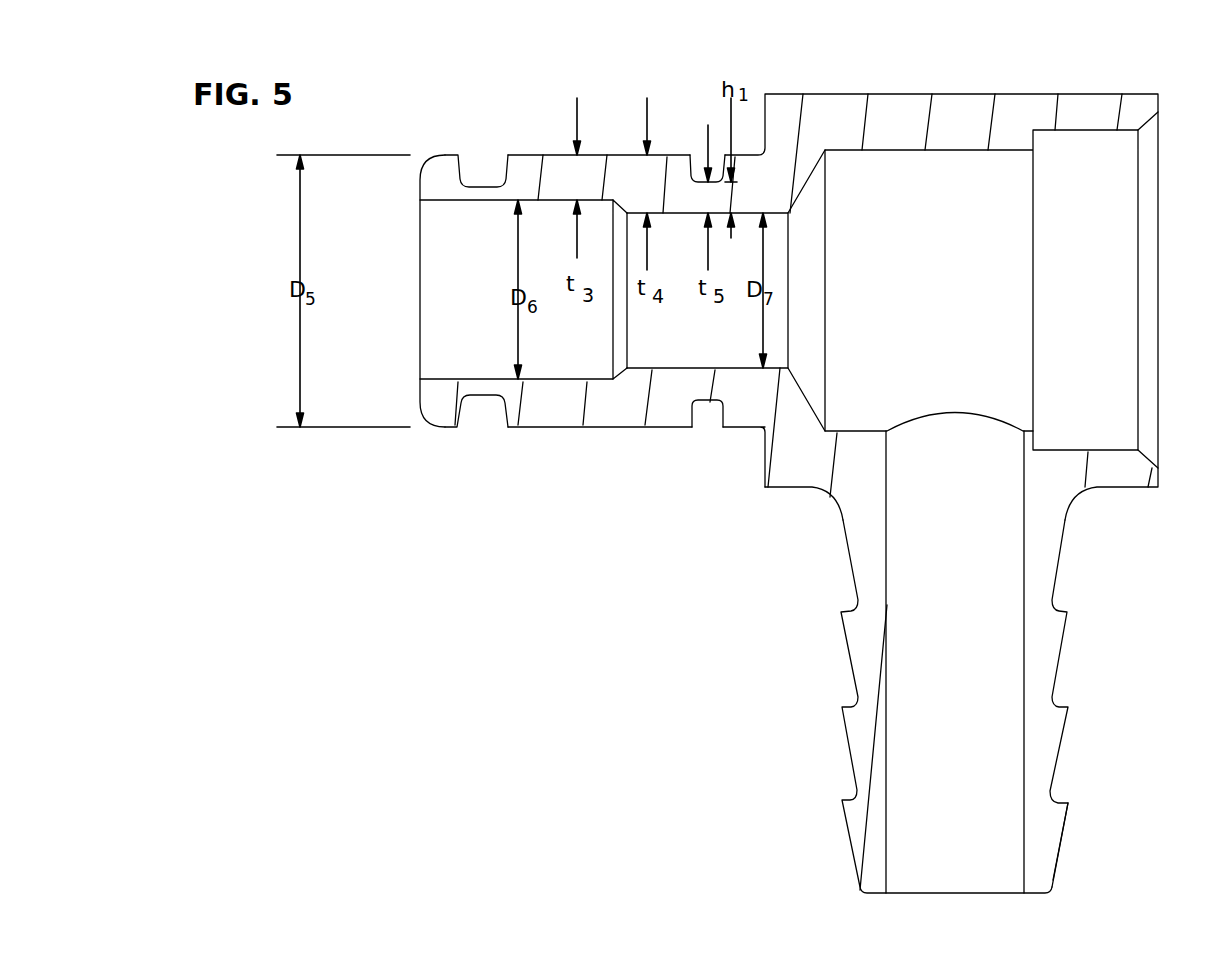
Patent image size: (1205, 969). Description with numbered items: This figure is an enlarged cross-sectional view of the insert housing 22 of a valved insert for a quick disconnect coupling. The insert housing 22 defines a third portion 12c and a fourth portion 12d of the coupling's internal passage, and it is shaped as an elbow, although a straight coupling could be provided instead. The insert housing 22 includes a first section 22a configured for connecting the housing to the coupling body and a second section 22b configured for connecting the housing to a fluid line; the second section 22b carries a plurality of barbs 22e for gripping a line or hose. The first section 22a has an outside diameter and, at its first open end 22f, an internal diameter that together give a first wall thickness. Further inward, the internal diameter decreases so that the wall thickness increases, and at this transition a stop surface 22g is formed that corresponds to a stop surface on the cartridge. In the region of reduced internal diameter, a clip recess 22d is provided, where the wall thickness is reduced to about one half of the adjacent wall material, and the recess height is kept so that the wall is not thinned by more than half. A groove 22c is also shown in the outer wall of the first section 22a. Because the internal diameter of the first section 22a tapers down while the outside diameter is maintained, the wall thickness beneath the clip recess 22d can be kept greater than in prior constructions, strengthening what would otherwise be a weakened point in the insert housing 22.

The insert housing 22 is at (598, 82).
The first section 22a is at (538, 407).
The second section 22b is at (1025, 732).
The first groove 22c is at (483, 187).
The clip recess 22d is at (691, 155).
The barbs 22e is at (1067, 612).
The first open end 22f is at (420, 325).
The stop surface 22g is at (622, 375).
The third portion of internal passage 12c is at (487, 296).
The fourth portion of internal passage 12d is at (982, 817).